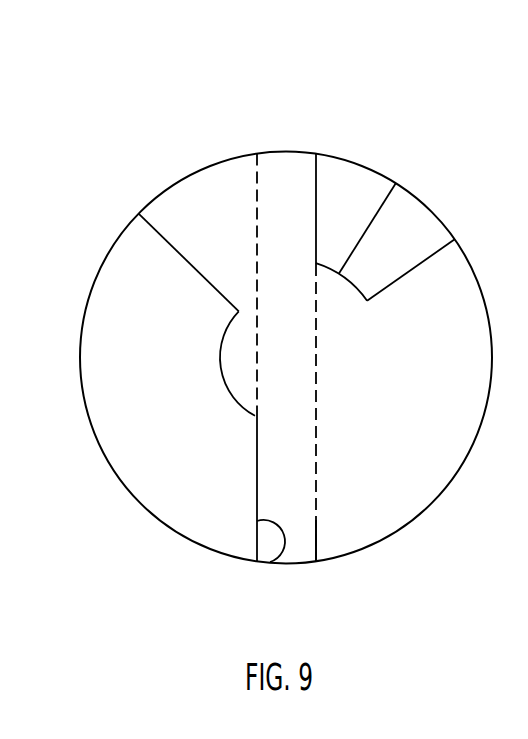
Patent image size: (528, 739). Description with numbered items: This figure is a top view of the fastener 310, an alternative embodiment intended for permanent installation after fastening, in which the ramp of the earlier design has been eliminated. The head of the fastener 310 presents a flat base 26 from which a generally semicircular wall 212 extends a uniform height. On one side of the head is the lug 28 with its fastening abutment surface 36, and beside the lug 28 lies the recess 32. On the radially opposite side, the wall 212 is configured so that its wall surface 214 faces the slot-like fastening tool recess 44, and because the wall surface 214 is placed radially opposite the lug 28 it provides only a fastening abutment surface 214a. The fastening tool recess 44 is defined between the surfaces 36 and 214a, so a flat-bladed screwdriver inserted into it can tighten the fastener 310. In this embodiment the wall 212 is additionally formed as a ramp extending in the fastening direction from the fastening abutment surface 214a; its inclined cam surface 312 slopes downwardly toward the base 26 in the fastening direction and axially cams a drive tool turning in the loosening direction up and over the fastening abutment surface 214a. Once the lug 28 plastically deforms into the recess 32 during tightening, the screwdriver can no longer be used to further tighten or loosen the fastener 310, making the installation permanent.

The fastener 310 is at (178, 88).
The inclined cam surface 312 is at (118, 437).
The wall 212 is at (172, 396).
The flat base 26 is at (408, 420).
The lug fastening abutment surface 36 is at (316, 170).
The lug 28 is at (362, 177).
The recess 32 is at (420, 222).
The wall surface 214 is at (257, 483).
The fastening abutment surface 214a is at (270, 565).
The fastening tool recess 44 is at (297, 547).